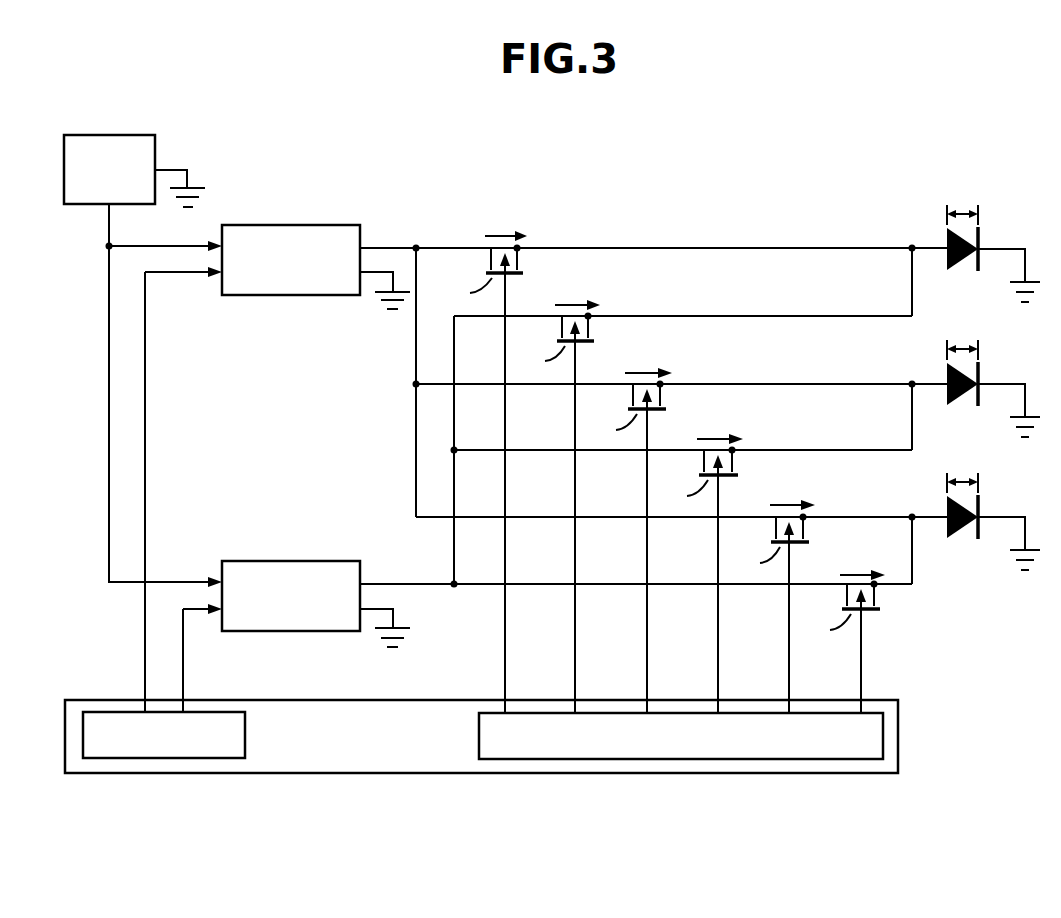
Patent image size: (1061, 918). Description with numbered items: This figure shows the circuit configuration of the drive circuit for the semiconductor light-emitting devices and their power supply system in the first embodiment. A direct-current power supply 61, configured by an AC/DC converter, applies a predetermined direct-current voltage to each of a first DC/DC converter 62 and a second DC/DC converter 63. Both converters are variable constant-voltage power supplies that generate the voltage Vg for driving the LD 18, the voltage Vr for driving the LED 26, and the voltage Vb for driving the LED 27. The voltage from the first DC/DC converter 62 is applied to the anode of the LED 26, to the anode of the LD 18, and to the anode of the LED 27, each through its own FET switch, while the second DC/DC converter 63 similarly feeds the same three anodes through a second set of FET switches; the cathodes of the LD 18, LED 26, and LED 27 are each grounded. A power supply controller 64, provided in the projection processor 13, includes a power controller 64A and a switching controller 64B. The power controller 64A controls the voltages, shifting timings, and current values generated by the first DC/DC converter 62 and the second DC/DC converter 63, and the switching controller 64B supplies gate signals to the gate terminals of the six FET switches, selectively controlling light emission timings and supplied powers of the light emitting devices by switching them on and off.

The projection processor 13 is at (616, 168).
The LD 18 is at (958, 398).
The LED 26 is at (958, 263).
The LED 27 is at (958, 531).
The direct-current power supply 61 is at (110, 135).
The first DC/DC converter 62 is at (313, 225).
The second DC/DC converter 63 is at (313, 561).
The power supply controller 64 is at (481, 748).
The power controller 64A is at (165, 758).
The switching controller 64B is at (683, 759).